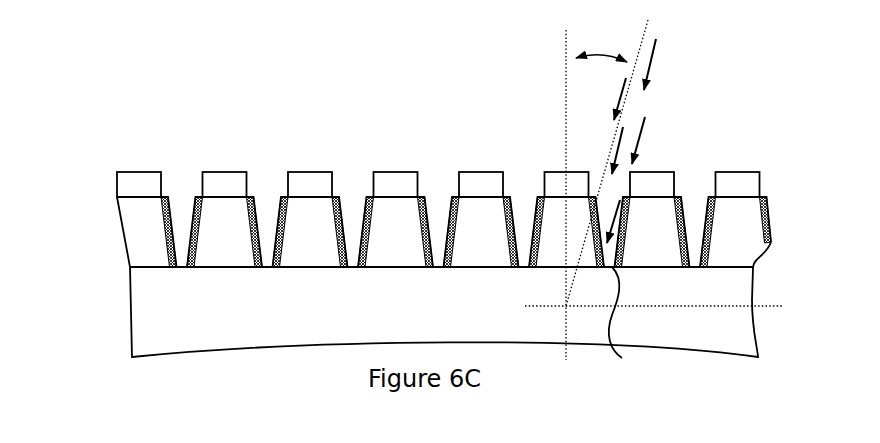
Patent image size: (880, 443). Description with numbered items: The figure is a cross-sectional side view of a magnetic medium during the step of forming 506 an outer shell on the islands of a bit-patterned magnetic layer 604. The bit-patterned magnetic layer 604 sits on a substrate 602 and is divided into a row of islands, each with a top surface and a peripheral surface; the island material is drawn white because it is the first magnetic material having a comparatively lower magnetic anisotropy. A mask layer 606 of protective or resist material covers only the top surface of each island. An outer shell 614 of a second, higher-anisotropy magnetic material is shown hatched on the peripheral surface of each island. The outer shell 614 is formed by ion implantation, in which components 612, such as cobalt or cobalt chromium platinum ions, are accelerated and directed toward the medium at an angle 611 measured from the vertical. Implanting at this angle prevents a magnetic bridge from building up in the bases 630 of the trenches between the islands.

The forming an outer shell 506 is at (90, 56).
The substrate 602 is at (143, 312).
The bit-patterned magnetic layer 604 is at (115, 198).
The mask layer 606 is at (107, 173).
The angle 611 is at (654, 190).
The components 612 is at (643, 141).
The outer shell 614 is at (363, 206).
The bases of the trenches 630 is at (630, 325).